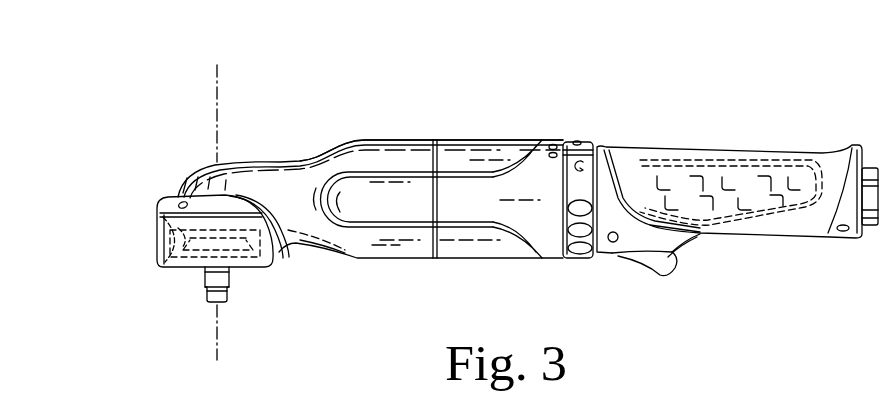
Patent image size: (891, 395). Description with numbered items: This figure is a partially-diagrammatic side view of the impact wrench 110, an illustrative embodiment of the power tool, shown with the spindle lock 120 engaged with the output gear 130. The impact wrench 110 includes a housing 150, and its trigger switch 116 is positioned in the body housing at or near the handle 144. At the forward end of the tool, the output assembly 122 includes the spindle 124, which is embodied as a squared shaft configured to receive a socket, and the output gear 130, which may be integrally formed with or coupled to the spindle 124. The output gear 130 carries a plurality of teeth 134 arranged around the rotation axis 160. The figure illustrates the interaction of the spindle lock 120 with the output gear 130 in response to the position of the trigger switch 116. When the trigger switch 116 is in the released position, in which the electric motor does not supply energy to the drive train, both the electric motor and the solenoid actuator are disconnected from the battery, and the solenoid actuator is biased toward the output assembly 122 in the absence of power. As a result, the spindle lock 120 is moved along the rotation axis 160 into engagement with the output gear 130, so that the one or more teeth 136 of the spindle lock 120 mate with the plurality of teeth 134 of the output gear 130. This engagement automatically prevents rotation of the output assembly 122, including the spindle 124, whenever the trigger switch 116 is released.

The impact wrench 110 is at (680, 97).
The trigger switch 116 is at (665, 260).
The spindle lock 120 is at (163, 210).
The output assembly 122 is at (181, 292).
The spindle 124 is at (228, 280).
The output gear 130 is at (176, 262).
The plurality of teeth 134 is at (176, 258).
The teeth of the spindle lock 136 is at (170, 238).
The handle 144 is at (739, 172).
The housing 150 is at (498, 118).
The rotation axis 160 is at (218, 111).